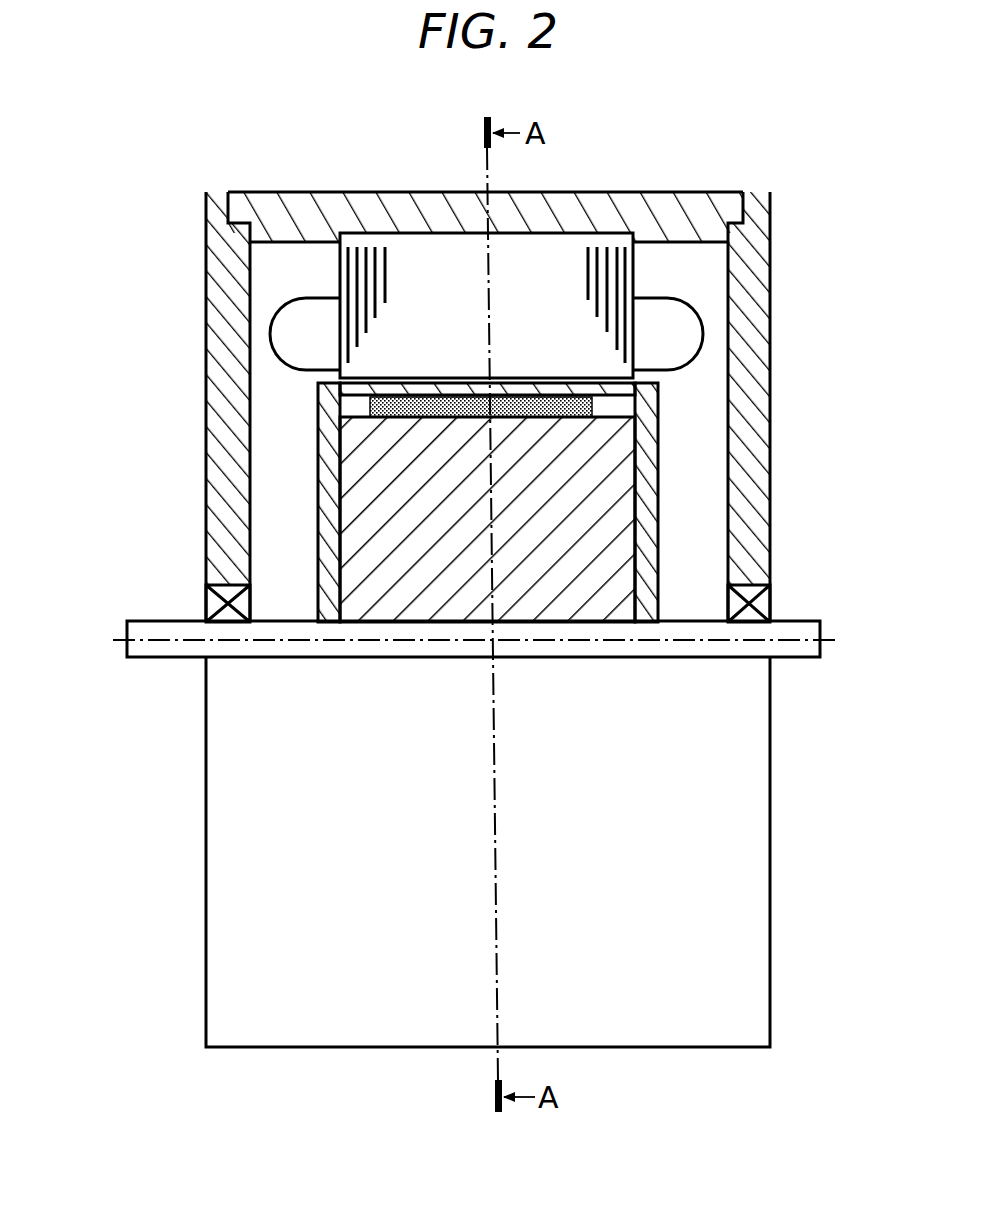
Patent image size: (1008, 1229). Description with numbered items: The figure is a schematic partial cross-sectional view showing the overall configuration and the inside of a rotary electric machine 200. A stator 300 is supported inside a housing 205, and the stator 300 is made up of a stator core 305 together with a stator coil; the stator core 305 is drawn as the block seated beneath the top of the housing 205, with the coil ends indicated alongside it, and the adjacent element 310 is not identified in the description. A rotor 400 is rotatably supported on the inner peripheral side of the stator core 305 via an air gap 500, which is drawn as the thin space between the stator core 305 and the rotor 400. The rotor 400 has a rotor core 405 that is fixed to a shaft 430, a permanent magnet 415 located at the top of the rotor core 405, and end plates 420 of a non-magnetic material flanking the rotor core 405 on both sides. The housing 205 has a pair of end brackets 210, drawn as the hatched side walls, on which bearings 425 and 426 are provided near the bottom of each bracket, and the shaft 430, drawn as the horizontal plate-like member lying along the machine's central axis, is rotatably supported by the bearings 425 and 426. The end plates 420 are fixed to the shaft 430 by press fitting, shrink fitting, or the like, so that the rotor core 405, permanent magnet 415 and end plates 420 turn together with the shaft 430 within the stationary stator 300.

The rotary electric machine 200 is at (493, 376).
The housing 205 is at (317, 225).
The end brackets 210 is at (218, 476).
The stator 300 is at (497, 254).
The stator core 305 is at (438, 265).
The O-ring seal 310 is at (290, 330).
The rotor 400 is at (513, 585).
The rotor core 405 is at (360, 603).
The permanent magnet 415 is at (432, 405).
The end plates 420 is at (316, 573).
The bearing 425 is at (216, 603).
The bearing 426 is at (756, 598).
The shaft 430 is at (153, 648).
The air gap 500 is at (567, 378).